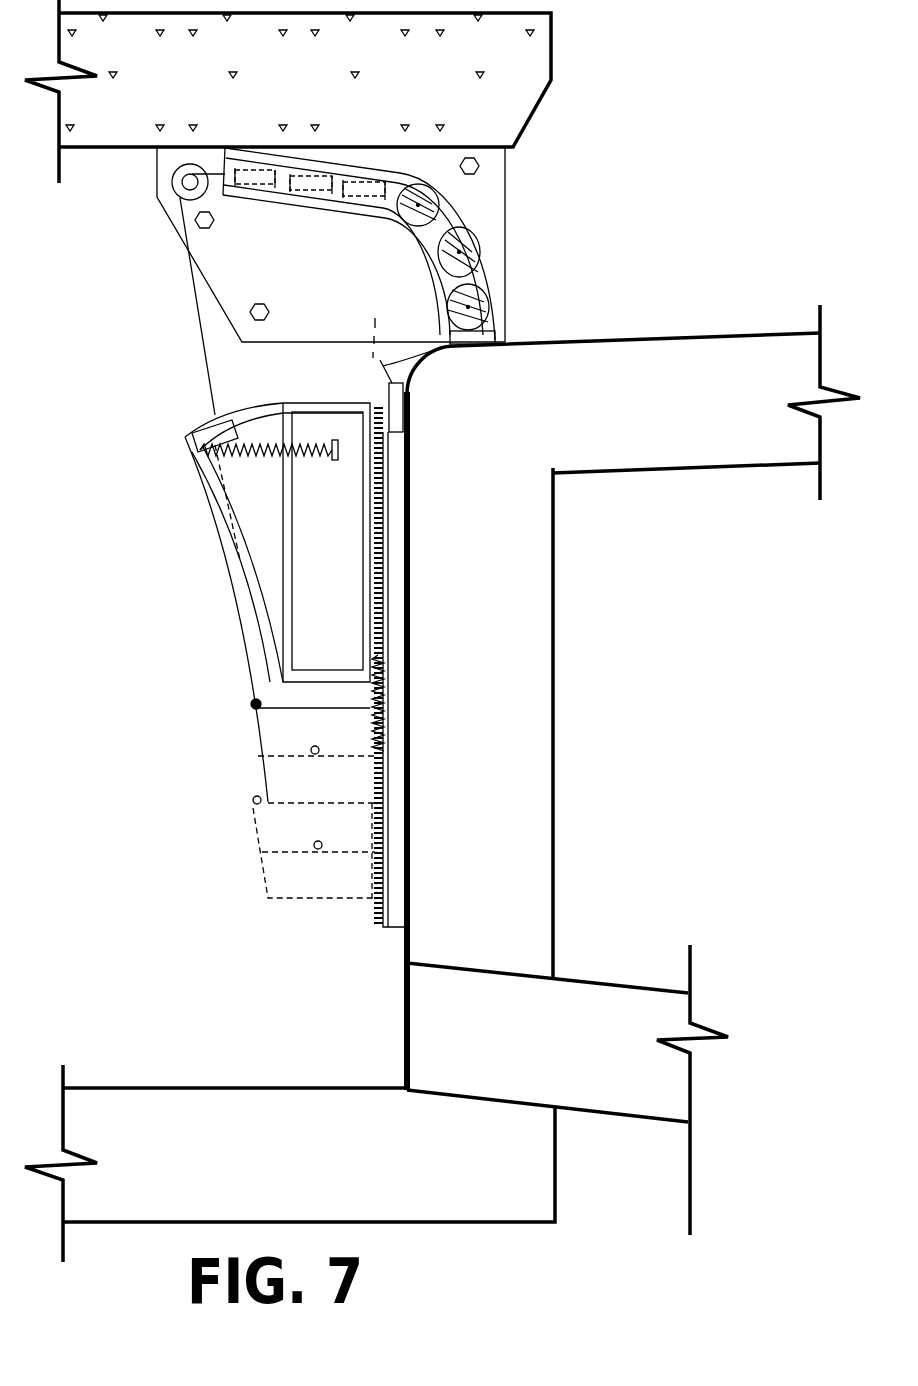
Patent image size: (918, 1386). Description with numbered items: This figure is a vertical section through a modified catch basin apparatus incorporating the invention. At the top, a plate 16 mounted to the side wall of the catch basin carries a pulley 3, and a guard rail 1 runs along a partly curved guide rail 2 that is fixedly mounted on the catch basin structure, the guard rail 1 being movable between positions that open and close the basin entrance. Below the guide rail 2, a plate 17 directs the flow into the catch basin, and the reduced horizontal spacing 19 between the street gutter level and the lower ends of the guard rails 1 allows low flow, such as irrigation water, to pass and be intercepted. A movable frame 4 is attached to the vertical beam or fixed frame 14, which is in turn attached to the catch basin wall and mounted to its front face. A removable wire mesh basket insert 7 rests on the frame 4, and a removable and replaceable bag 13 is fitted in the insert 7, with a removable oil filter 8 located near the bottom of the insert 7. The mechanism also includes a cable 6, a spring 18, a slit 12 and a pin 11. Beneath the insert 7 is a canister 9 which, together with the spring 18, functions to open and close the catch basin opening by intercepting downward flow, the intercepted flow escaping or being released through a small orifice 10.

The guard rail 1 is at (478, 250).
The guide rail 2 is at (480, 293).
The pulley 3 is at (180, 197).
The movable frame 4 is at (381, 540).
The cable 6 is at (205, 336).
The wire mesh basket insert 7 is at (312, 600).
The oil filter 8 is at (222, 525).
The canister 9 is at (272, 726).
The orifice 10 is at (315, 755).
The pin 11 is at (303, 455).
The slit 12 is at (192, 452).
The bag 13 is at (237, 565).
The fixed frame 14 is at (392, 922).
The plate 16 is at (487, 203).
The plate 17 is at (382, 364).
The spring 18 is at (216, 416).
The reduced horizontal spacing 19 is at (497, 340).